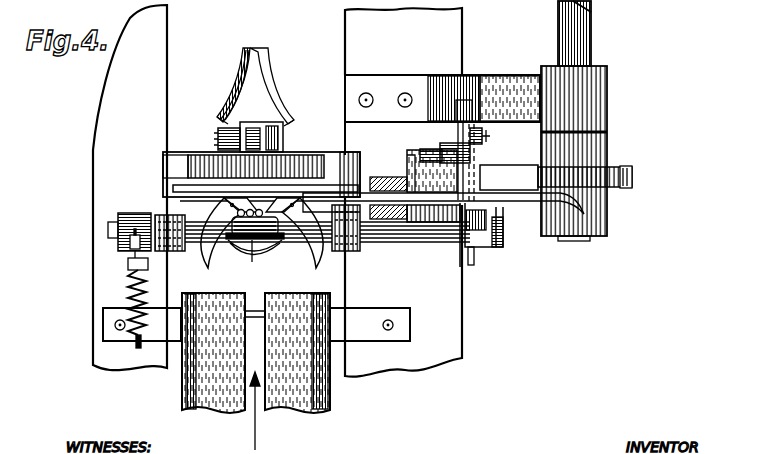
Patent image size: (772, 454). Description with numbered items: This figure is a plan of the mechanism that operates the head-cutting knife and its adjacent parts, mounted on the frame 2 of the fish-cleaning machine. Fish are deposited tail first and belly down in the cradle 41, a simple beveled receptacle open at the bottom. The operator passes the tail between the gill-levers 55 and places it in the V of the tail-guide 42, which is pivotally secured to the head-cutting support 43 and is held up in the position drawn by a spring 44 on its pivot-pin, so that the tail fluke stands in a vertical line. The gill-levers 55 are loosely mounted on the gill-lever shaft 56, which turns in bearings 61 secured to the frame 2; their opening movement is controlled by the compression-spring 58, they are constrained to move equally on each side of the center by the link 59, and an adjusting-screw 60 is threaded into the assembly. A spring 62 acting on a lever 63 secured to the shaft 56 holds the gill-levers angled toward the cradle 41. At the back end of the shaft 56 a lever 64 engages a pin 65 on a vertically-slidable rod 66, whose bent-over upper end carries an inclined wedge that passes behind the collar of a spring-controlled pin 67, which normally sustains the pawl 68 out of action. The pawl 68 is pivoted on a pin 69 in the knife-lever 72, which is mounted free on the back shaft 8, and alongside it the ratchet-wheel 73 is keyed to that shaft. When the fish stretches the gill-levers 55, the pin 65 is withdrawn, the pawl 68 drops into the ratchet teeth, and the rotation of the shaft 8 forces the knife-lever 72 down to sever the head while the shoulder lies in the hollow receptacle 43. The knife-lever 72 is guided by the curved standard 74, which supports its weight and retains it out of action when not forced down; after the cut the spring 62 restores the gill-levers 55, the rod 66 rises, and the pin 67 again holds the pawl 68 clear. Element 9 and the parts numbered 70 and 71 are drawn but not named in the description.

The frame 2 is at (166, 78).
The back shaft 8 is at (588, 34).
The sleeve 9 is at (607, 91).
The cradle 41 is at (219, 410).
The tail-guide 42 is at (258, 48).
The head-cutting support 43 is at (294, 156).
The spring 44 is at (218, 135).
The gill-levers 55 is at (208, 262).
The gill-lever shaft 56 is at (118, 228).
The compression-spring 58 is at (224, 216).
The link 59 is at (268, 256).
The adjusting-screw 60 is at (252, 250).
The bearings 61 is at (162, 222).
The spring 62 is at (128, 289).
The lever 63 is at (128, 262).
The lever 64 is at (486, 156).
The pin 65 is at (490, 138).
The vertically-slidable rod 66 is at (460, 128).
The spring-controlled pin 67 is at (471, 262).
The pawl 68 is at (509, 177).
The pin 69 is at (446, 153).
The pawl 70 is at (420, 155).
The bar 71 is at (183, 188).
The knife-lever 72 is at (392, 195).
The ratchet-wheel 73 is at (622, 168).
The curved standard 74 is at (376, 188).